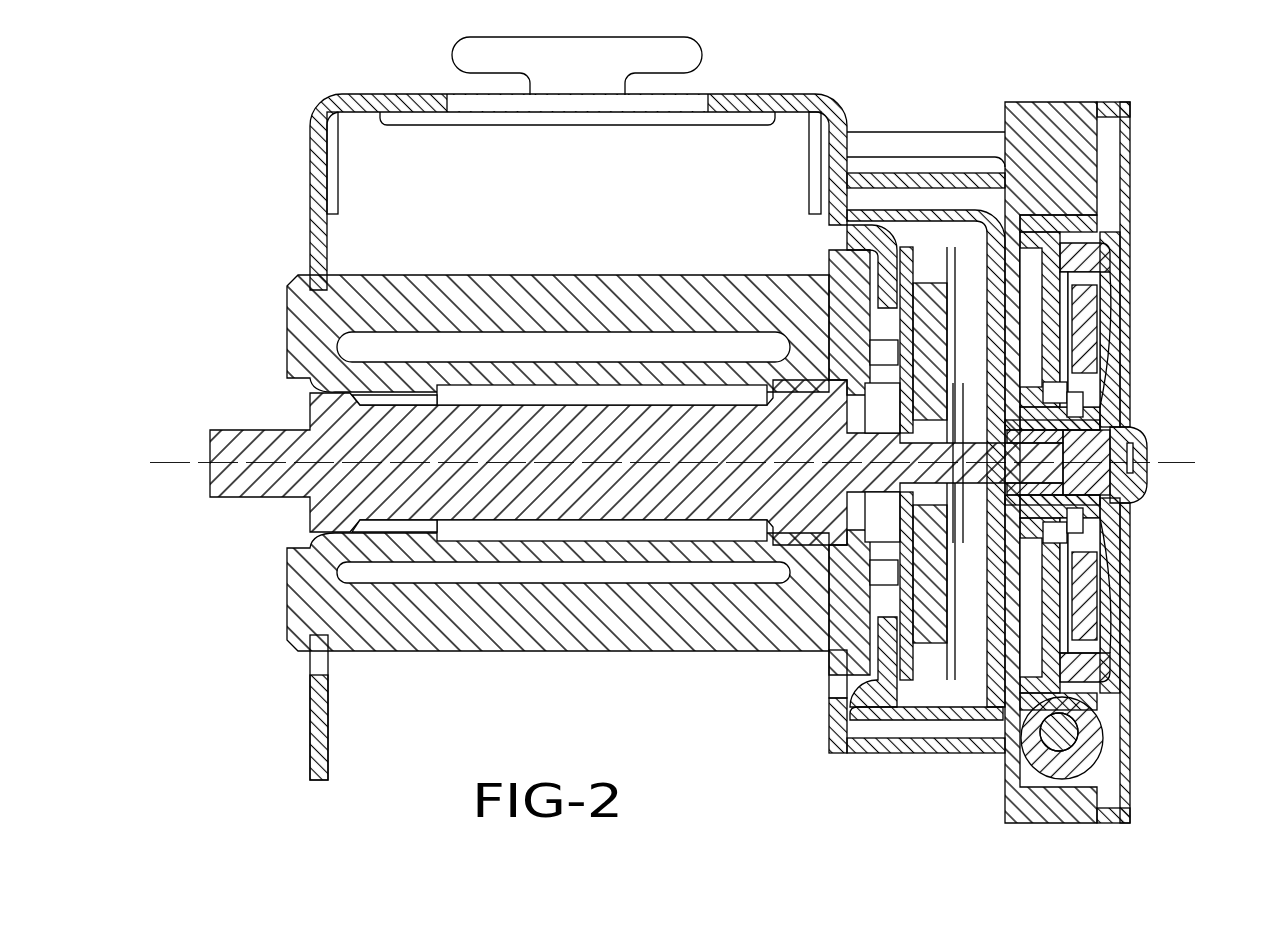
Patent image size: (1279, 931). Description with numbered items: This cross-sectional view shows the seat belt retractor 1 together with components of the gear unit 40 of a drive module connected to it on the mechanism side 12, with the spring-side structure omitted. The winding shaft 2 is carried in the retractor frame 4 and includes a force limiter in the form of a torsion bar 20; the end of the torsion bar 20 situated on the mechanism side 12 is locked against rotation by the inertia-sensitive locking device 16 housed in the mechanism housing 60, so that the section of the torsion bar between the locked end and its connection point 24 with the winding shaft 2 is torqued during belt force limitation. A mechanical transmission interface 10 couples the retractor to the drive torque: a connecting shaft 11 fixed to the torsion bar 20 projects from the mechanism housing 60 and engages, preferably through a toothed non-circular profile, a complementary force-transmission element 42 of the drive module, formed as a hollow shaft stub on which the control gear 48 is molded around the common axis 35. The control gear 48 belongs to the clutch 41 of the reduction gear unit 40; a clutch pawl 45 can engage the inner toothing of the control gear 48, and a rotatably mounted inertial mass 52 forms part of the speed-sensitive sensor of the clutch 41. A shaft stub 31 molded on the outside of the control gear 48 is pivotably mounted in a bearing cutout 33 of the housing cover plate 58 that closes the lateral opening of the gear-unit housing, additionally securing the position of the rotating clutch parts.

The seat belt retractor 1 is at (136, 210).
The winding shaft 2 is at (640, 627).
The retractor frame 4 is at (818, 95).
The mechanical transmission interface 10 is at (1050, 414).
The connecting shaft 11 is at (1040, 455).
The mechanism side 12 is at (893, 768).
The locking device 16 is at (916, 690).
The torsion bar 20 is at (540, 508).
The connection point 24 is at (403, 520).
The shaft stub 31 is at (1143, 483).
The bearing cutout 33 is at (1147, 452).
The common axis 35 is at (170, 462).
The gear unit 40 is at (1116, 714).
The clutch 41 is at (1134, 462).
The force-transmission element 42 is at (1087, 505).
The clutch pawl 45 is at (1082, 652).
The control gear 48 is at (1110, 272).
The inertial mass 52 is at (1086, 597).
The housing cover plate 58 is at (1140, 178).
The mechanism housing 60 is at (883, 705).